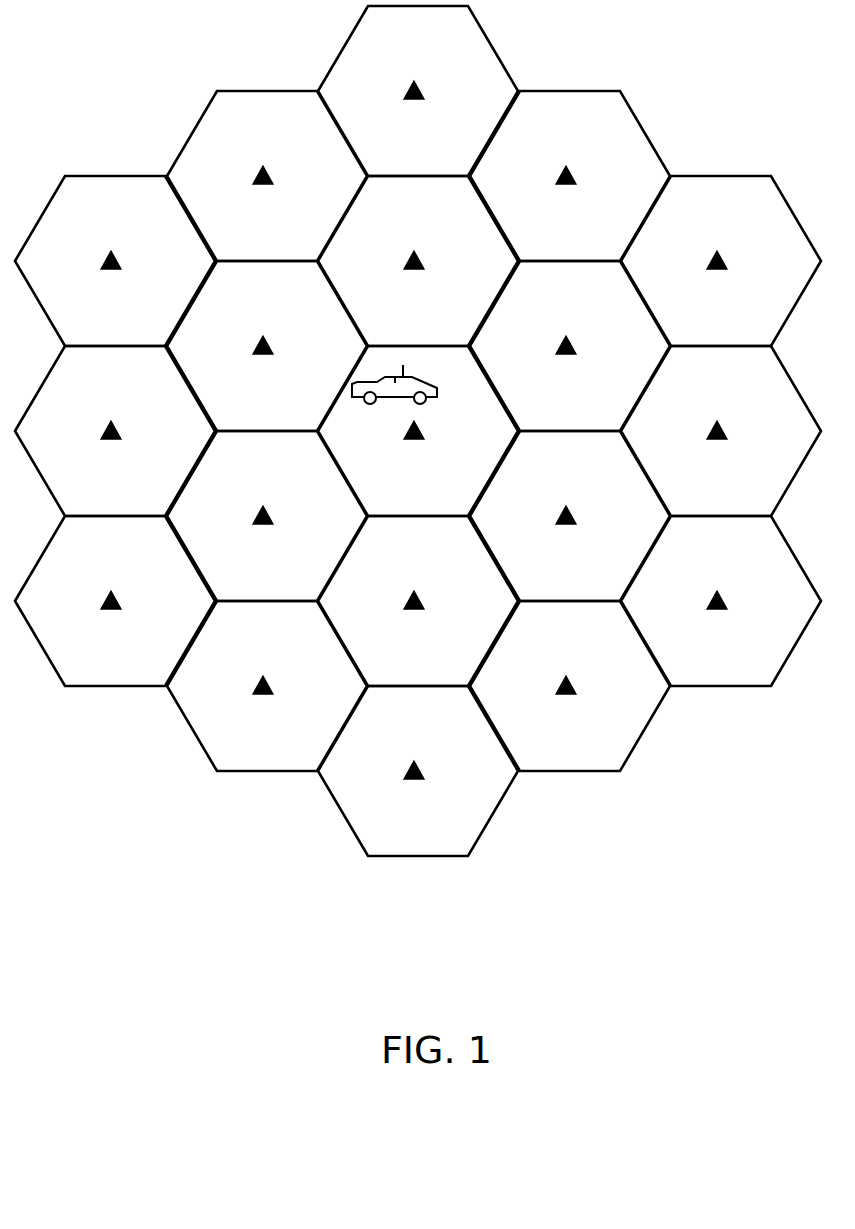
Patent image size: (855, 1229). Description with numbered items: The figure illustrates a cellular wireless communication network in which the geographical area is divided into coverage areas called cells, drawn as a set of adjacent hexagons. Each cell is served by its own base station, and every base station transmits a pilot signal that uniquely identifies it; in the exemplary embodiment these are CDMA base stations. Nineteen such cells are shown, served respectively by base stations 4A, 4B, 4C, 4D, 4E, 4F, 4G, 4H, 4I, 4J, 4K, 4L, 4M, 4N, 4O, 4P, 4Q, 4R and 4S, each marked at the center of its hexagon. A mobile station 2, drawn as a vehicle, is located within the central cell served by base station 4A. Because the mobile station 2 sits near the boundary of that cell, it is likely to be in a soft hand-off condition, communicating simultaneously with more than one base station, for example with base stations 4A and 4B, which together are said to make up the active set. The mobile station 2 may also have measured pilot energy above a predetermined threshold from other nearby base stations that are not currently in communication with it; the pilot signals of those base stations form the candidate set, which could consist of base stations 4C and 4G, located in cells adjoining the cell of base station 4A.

The mobile station 2 is at (428, 383).
The base station 4A is at (417, 422).
The base station 4B is at (417, 252).
The base station 4C is at (266, 337).
The base station 4D is at (266, 507).
The base station 4E is at (417, 592).
The base station 4F is at (569, 507).
The base station 4G is at (569, 337).
The base station 4H is at (417, 82).
The base station 4I is at (266, 167).
The base station 4J is at (114, 252).
The base station 4K is at (114, 422).
The base station 4L is at (114, 592).
The base station 4M is at (266, 677).
The base station 4N is at (417, 762).
The base station 4O is at (569, 677).
The base station 4P is at (720, 592).
The base station 4Q is at (720, 422).
The base station 4R is at (720, 252).
The base station 4S is at (569, 167).